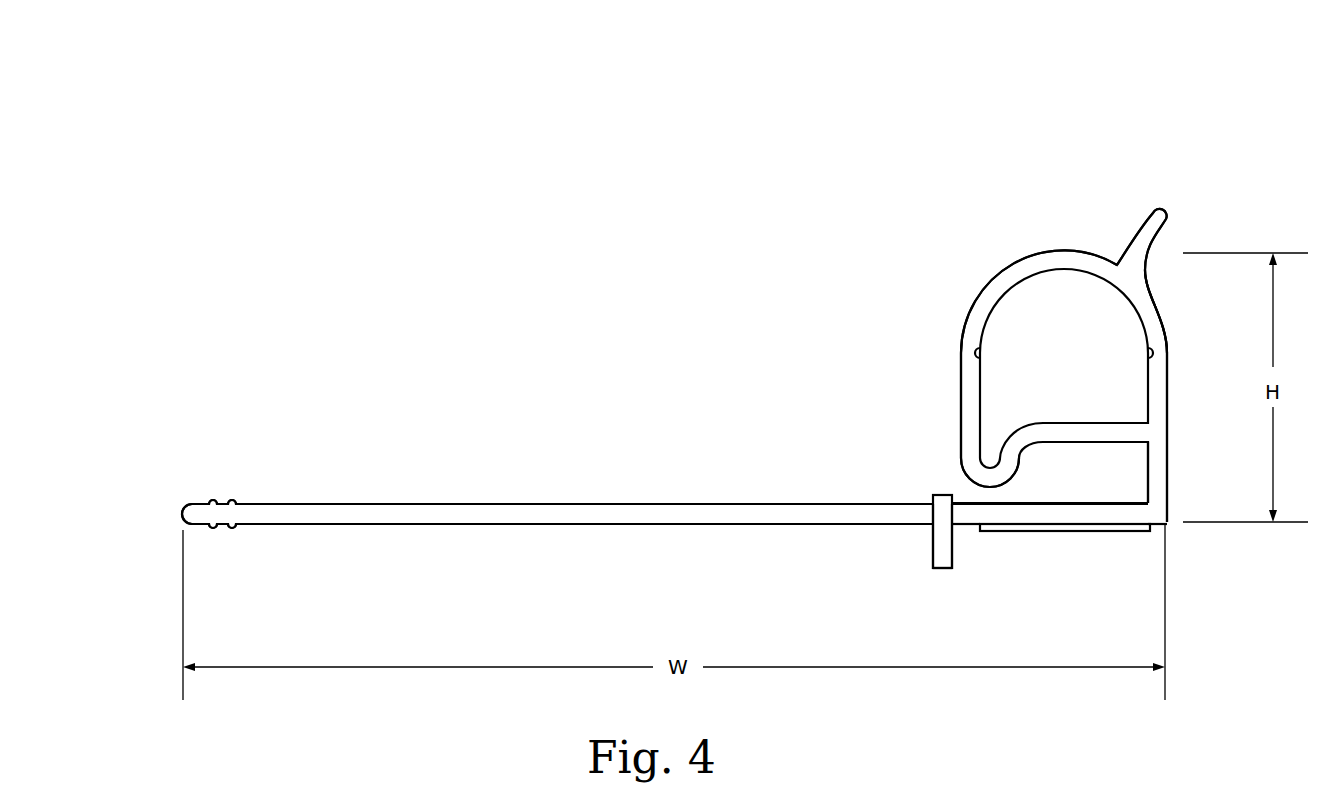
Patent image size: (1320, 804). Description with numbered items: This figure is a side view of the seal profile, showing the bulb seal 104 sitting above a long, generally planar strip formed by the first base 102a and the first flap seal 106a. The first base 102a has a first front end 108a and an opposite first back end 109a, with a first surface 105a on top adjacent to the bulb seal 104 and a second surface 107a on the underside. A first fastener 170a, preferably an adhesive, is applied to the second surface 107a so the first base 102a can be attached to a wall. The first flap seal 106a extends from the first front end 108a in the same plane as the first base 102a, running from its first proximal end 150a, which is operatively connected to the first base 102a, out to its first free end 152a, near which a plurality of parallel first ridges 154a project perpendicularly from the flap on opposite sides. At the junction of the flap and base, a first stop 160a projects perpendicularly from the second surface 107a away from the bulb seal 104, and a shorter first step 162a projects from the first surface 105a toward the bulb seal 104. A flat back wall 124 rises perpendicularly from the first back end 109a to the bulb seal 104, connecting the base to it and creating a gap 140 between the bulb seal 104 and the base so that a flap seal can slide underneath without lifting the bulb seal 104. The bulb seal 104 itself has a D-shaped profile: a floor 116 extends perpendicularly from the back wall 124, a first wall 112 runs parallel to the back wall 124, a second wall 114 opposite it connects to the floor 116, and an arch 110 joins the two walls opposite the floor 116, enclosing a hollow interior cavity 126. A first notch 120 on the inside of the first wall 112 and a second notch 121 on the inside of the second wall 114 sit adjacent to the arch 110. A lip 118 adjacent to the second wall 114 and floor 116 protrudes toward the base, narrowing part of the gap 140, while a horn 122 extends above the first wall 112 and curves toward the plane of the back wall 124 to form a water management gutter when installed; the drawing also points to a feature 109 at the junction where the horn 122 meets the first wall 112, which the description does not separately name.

The bulb seal 104 is at (1063, 148).
The first flap seal 106a is at (530, 347).
The arch 110 is at (1025, 258).
The horn 122 is at (1143, 222).
The flare base / notch 109 is at (1158, 250).
The first wall 112 is at (1163, 360).
The second wall 114 is at (965, 387).
The lip 118 is at (963, 480).
The hollow interior cavity 126 is at (1086, 388).
The second notch 121 is at (978, 356).
The first notch 120 is at (1148, 352).
The back wall 124 is at (1160, 450).
The floor 116 is at (1125, 478).
The gap 140 is at (1125, 495).
The first surface 105a is at (1043, 498).
The first base 102a is at (1097, 515).
The first fastener 170a is at (1037, 530).
The first ridge 154a is at (232, 498).
The first free end 152a is at (165, 520).
The first step 162a is at (933, 495).
The first proximal end 150a is at (915, 546).
The first stop 160a is at (940, 568).
The first front end 108a is at (962, 542).
The second surface 107a is at (977, 537).
The first back end 109a is at (1153, 542).